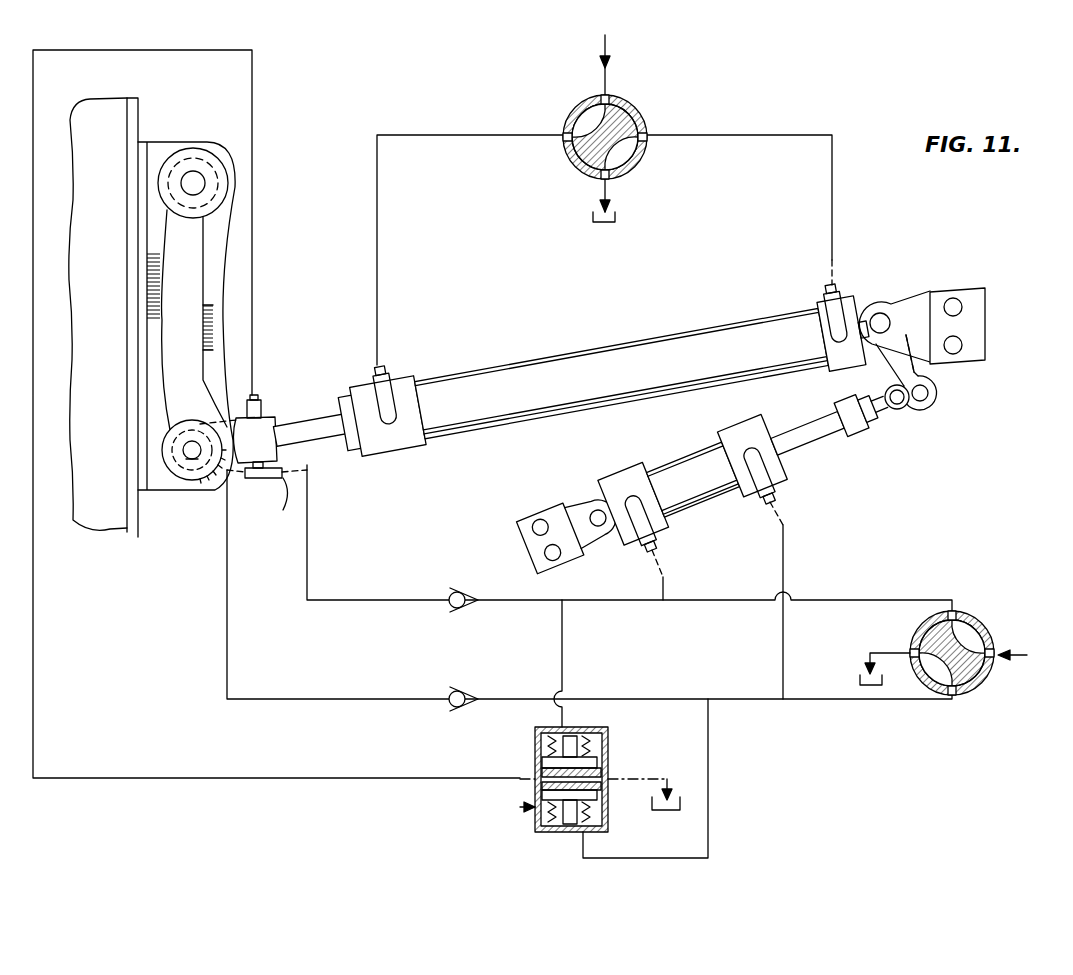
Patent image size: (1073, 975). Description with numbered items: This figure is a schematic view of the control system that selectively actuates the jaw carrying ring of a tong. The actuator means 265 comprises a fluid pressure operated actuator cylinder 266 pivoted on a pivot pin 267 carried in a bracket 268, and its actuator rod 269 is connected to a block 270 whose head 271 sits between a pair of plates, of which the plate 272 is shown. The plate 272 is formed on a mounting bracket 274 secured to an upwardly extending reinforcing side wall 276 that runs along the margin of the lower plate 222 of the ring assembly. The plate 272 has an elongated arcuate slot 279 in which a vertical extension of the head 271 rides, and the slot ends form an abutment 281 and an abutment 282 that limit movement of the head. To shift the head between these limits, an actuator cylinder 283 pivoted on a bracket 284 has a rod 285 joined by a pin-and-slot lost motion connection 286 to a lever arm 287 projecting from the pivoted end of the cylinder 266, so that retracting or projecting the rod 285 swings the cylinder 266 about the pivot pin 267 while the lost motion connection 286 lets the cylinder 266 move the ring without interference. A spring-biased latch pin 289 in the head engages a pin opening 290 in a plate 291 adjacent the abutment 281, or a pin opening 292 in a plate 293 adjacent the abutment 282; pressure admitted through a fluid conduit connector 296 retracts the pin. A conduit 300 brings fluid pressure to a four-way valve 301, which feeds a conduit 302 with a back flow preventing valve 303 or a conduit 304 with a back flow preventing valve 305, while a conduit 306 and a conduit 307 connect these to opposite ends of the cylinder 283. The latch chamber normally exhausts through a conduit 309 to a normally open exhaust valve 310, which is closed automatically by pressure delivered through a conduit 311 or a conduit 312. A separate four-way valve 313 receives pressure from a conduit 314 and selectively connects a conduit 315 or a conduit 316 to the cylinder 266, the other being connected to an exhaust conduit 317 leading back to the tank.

The lower plate 222 is at (98, 118).
The mounting bracket 274 is at (141, 418).
The reinforcing side wall 276 is at (135, 528).
The plate 272 is at (212, 278).
The arcuate slot 279 is at (205, 330).
The abutment 281 is at (200, 162).
The plate 291 is at (219, 176).
The pin opening 290 is at (201, 184).
The abutment 282 is at (191, 478).
The latch pin 289 is at (192, 440).
The pin opening 292 is at (191, 458).
The plate 293 is at (189, 463).
The actuator rod 269 is at (311, 405).
The block 270 is at (280, 457).
The head 271 is at (243, 480).
The fluid conduit connector 296 is at (282, 508).
The actuator means 265 is at (423, 367).
The actuator cylinder 266 is at (636, 333).
The pivot pin 267 is at (881, 321).
The bracket 268 is at (973, 300).
The lever arm 287 is at (883, 367).
The pin-and-slot lost motion connection 286 is at (934, 390).
The actuator cylinder 283 is at (686, 464).
The bracket 284 is at (556, 503).
The rod 285 is at (837, 444).
The conduit 309 is at (278, 777).
The conduit 315 is at (476, 135).
The conduit 316 is at (788, 137).
The conduit 314 is at (607, 45).
The exhaust conduit 317 is at (607, 192).
The 4-way valve 313 is at (637, 104).
The conduit 302 is at (873, 601).
The back flow preventing valve 303 is at (463, 592).
The conduit 304 is at (733, 702).
The back flow preventing valve 305 is at (467, 692).
The conduit 306 is at (663, 577).
The conduit 307 is at (783, 553).
The conduit 311 is at (562, 650).
The conduit 312 is at (708, 779).
The exhaust valve 310 is at (520, 806).
The 4-way valve 301 is at (988, 618).
The conduit 300 is at (1033, 658).